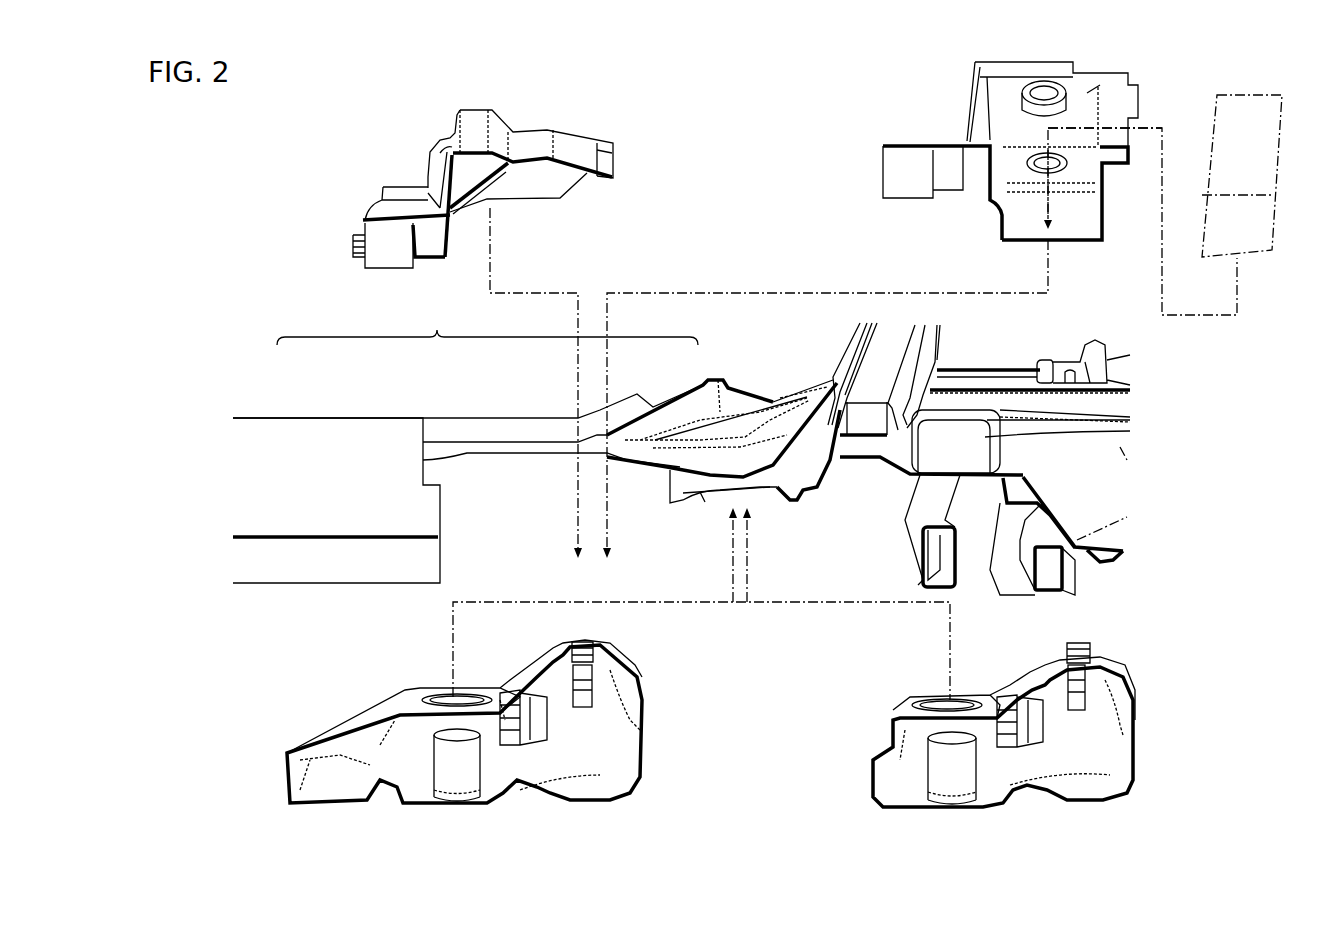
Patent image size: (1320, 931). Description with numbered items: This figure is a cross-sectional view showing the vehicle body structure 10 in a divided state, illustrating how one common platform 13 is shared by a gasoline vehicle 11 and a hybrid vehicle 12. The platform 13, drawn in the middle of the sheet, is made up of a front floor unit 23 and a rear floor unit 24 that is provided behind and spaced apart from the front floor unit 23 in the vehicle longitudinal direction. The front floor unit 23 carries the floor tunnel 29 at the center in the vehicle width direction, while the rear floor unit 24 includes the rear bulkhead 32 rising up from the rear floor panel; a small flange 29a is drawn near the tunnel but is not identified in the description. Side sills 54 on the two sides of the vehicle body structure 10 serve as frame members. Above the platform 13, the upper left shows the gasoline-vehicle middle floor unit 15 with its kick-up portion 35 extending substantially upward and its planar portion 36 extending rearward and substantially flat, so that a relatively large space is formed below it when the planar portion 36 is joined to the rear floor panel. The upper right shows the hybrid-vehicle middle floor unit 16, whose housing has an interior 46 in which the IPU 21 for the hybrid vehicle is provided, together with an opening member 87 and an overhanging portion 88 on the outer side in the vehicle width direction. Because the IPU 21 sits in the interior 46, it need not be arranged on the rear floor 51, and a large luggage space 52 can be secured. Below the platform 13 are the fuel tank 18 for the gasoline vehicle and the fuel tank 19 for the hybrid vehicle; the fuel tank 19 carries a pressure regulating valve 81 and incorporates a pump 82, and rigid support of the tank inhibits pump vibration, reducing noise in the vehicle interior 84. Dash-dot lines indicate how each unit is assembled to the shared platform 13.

The vehicle body structure 10 is at (248, 300).
The gasoline vehicle 11 is at (380, 145).
The hybrid vehicle 12 is at (855, 158).
The platform 13 is at (487, 323).
The gasoline-vehicle middle floor unit 15 is at (548, 130).
The hybrid-vehicle middle floor unit 16 is at (965, 95).
The fuel tank for a gasoline vehicle 18 is at (350, 722).
The fuel tank for a hybrid vehicle 19 is at (912, 700).
The IPU 21 is at (1240, 90).
The front floor unit 23 is at (350, 416).
The rear floor unit 24 is at (775, 388).
The floor tunnel 29 is at (318, 535).
The side sill flange 29a is at (378, 213).
The rear bulkhead 32 is at (937, 352).
The kick-up portion 35 is at (440, 160).
The planar portion 36 is at (580, 147).
The interior 46 is at (1063, 223).
The rear floor 51 is at (975, 470).
The luggage space 52 is at (1078, 481).
The side sills 54 is at (470, 432).
The valve 81 is at (600, 673).
The pump 82 is at (470, 777).
The vehicle interior 84 is at (363, 478).
The opening member 87 is at (1112, 98).
The overhanging portion 88 is at (1092, 73).